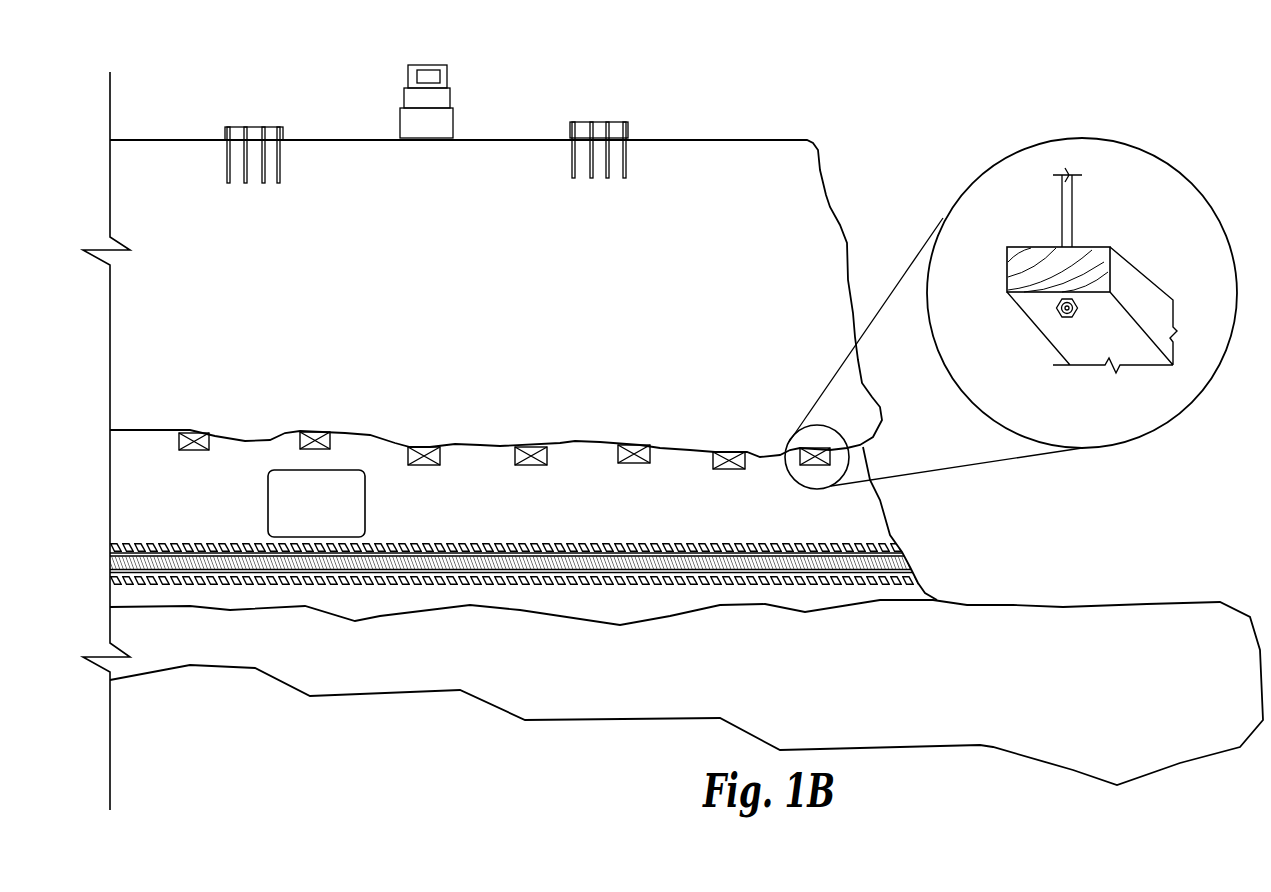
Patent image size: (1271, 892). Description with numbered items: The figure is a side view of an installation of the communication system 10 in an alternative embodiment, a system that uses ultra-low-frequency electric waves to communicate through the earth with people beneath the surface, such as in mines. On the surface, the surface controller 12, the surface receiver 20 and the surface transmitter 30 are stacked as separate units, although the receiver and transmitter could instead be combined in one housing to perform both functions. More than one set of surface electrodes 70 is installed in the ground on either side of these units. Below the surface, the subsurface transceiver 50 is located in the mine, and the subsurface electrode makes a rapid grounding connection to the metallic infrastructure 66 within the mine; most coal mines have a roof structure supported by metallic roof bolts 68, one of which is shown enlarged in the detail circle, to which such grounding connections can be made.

The communication system 10 is at (326, 71).
The surface controller 12 is at (428, 65).
The surface receiver 20 is at (403, 98).
The surface transmitter 30 is at (455, 123).
The surface electrodes 70 is at (255, 127).
The subsurface transceiver 50 is at (282, 502).
The metallic infrastructure 66 is at (425, 467).
The metallic roof bolts 68 is at (1065, 317).